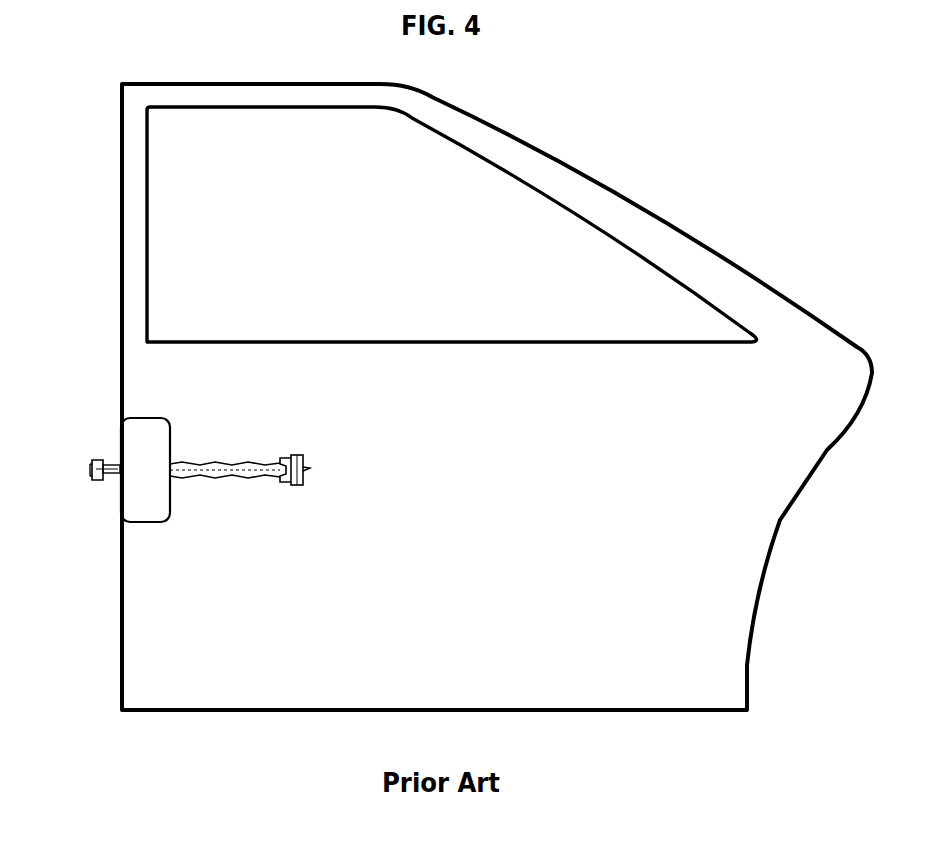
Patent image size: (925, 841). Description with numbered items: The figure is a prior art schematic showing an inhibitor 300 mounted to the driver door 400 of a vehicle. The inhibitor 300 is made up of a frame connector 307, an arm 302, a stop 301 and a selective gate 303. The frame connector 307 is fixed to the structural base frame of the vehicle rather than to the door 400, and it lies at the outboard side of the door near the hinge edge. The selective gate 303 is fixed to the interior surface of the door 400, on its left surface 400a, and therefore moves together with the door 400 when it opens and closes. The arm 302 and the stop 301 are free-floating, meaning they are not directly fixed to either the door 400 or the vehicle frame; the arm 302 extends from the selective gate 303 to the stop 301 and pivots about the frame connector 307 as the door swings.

The driver door 400 is at (614, 190).
The left surface of the door 400a is at (120, 132).
The inhibitor 300 is at (287, 410).
The stop 301 is at (296, 453).
The arm 302 is at (191, 458).
The selective gate 303 is at (143, 416).
The frame connector 307 is at (84, 468).